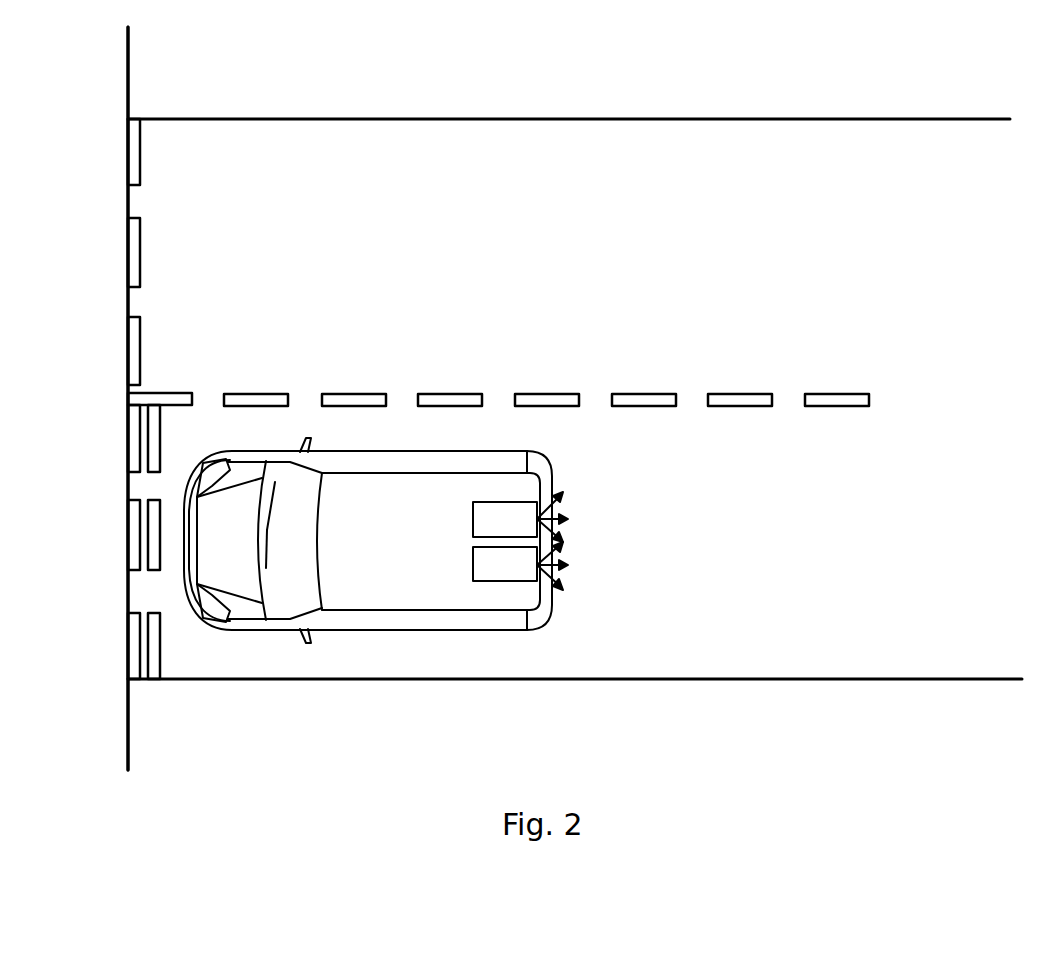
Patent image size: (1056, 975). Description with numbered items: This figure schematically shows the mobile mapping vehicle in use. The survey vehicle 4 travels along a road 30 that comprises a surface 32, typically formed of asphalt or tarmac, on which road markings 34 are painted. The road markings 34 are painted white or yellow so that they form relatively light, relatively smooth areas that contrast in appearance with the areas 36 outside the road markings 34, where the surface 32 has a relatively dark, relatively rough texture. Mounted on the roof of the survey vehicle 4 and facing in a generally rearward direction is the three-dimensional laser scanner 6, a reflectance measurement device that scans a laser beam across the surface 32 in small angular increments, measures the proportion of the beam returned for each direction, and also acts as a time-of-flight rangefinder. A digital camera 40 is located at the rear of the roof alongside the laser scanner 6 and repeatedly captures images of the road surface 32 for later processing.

The survey vehicle 4 is at (421, 598).
The 3D laser scanner 6 is at (508, 505).
The road 30 is at (908, 213).
The surface 32 is at (785, 619).
The road markings 34 is at (257, 401).
The areas outside the road markings 36 is at (857, 515).
The digital camera 40 is at (520, 573).